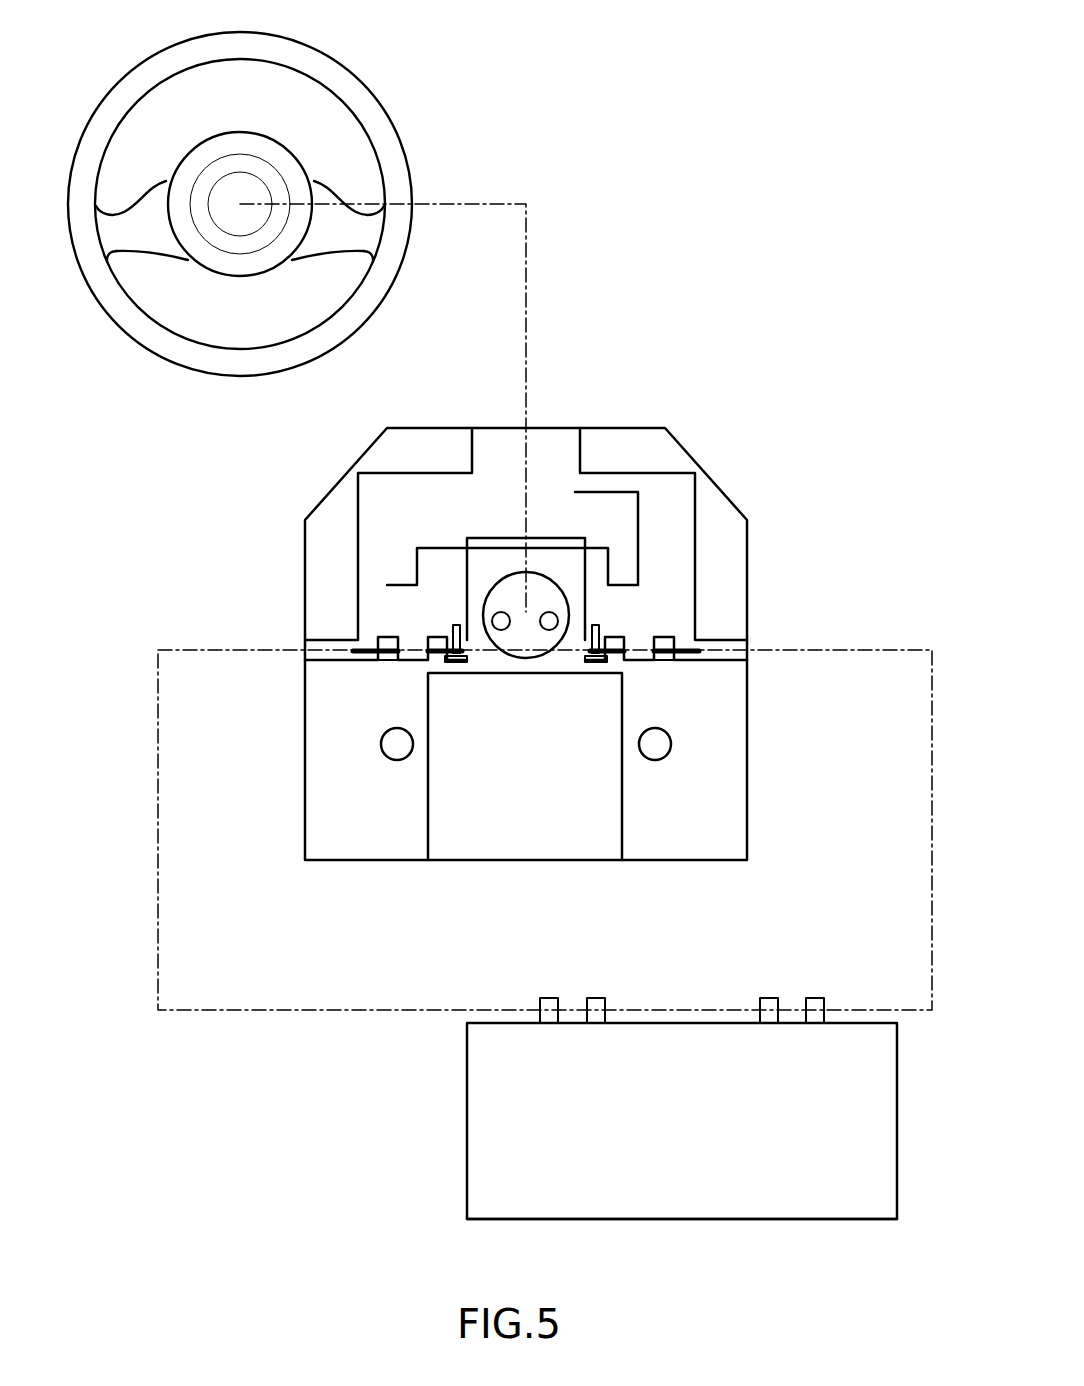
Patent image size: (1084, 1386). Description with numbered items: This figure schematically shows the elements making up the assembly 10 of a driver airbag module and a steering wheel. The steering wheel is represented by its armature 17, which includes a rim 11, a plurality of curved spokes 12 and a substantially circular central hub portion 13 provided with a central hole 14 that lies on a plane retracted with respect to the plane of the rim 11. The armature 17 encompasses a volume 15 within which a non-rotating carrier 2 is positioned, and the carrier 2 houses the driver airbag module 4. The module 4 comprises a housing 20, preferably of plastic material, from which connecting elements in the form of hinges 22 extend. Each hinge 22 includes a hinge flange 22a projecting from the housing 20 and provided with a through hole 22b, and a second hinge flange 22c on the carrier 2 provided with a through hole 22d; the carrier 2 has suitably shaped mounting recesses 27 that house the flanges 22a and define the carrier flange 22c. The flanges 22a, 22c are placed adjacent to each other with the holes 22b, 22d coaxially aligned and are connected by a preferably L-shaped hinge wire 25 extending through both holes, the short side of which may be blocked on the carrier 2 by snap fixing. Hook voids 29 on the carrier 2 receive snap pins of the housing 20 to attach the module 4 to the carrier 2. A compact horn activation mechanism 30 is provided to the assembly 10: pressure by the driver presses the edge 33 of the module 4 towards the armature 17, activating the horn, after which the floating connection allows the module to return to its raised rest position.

The carrier 2 is at (686, 430).
The driver airbag module 4 is at (639, 1106).
The assembly 10 is at (824, 154).
The rim 11 is at (207, 53).
The curved spokes 12 is at (128, 233).
The hub portion 13 is at (252, 262).
The central hole 14 is at (230, 213).
The volume 15 is at (348, 170).
The armature 17 is at (260, 215).
The housing 20 is at (483, 1098).
The hinges 22 is at (685, 971).
The hinge flange 22a is at (597, 996).
The through hole 22b is at (540, 1007).
The second hinge flange 22c is at (410, 663).
The through hole 22d is at (372, 645).
The hinge wire 25 is at (358, 663).
The mounting recesses 27 is at (435, 635).
The hook voids 29 is at (395, 747).
The horn activation mechanism 30 is at (678, 1236).
The edge 33 is at (755, 1220).